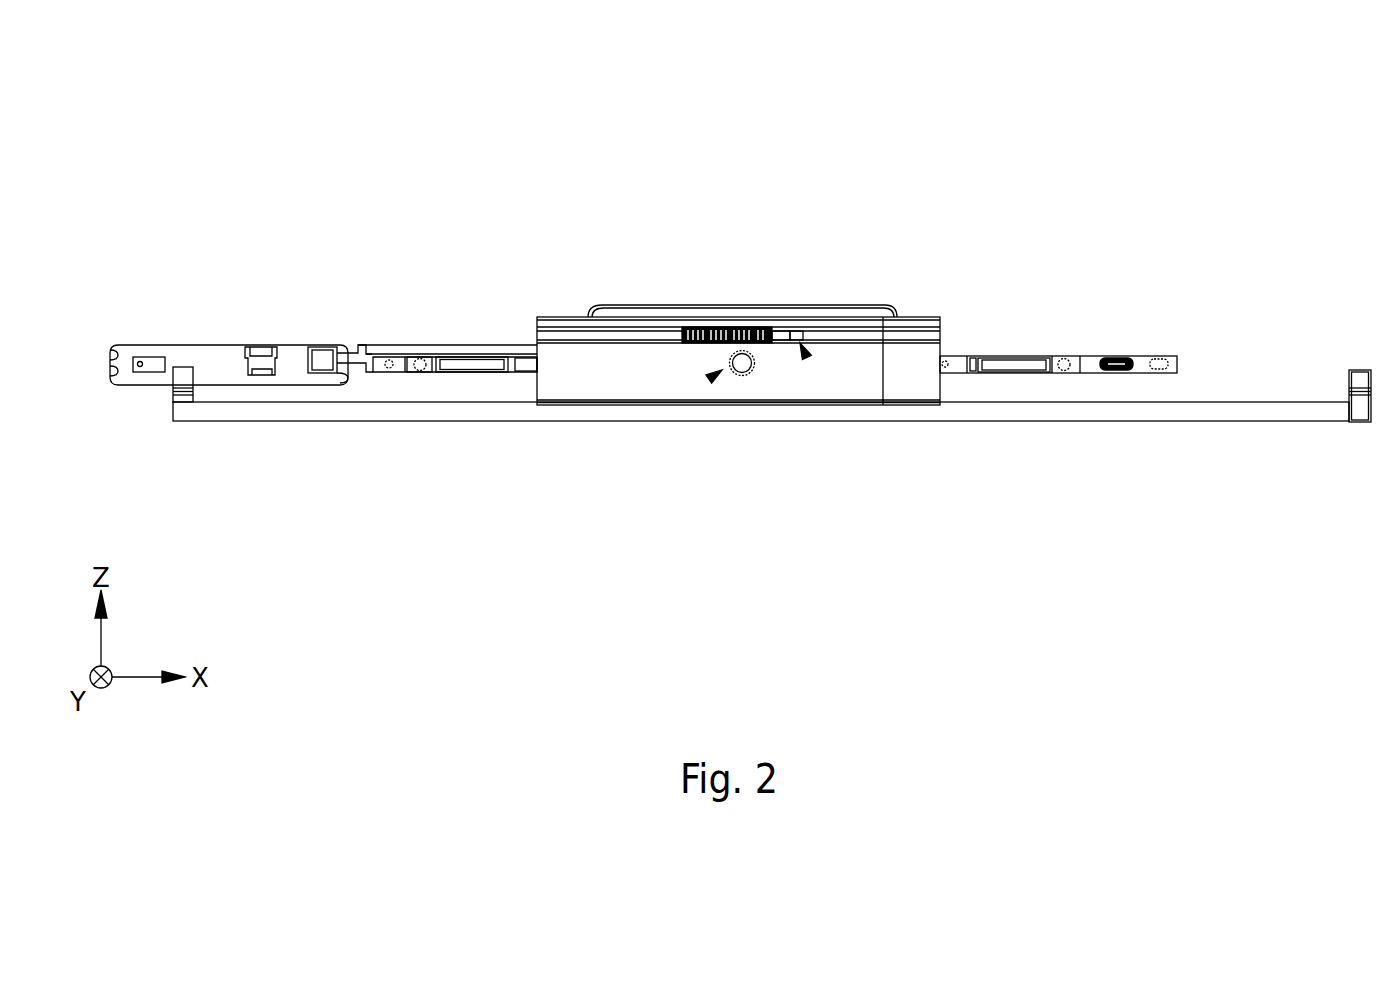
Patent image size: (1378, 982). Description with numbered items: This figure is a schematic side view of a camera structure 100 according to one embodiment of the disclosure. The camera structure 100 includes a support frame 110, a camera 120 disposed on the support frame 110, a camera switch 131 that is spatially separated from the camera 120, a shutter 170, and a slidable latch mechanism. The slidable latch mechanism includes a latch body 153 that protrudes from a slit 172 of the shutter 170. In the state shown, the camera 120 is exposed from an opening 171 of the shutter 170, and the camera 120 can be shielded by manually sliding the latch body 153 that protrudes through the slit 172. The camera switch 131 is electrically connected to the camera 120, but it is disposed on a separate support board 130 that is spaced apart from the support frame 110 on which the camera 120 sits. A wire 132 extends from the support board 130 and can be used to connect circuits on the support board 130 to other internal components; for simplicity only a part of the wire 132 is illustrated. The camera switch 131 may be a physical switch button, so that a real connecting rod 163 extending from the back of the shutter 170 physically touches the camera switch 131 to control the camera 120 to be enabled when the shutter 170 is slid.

The camera structure 100 is at (1255, 93).
The support frame 110 is at (1094, 357).
The camera 120 is at (741, 378).
The support board 130 is at (203, 345).
The camera switch 131 is at (325, 347).
The wire 132 is at (1038, 410).
The latch body 153 is at (706, 330).
The connecting rod 163 is at (401, 348).
The shutter 170 is at (916, 345).
The opening 171 is at (709, 379).
The slit 172 is at (806, 357).